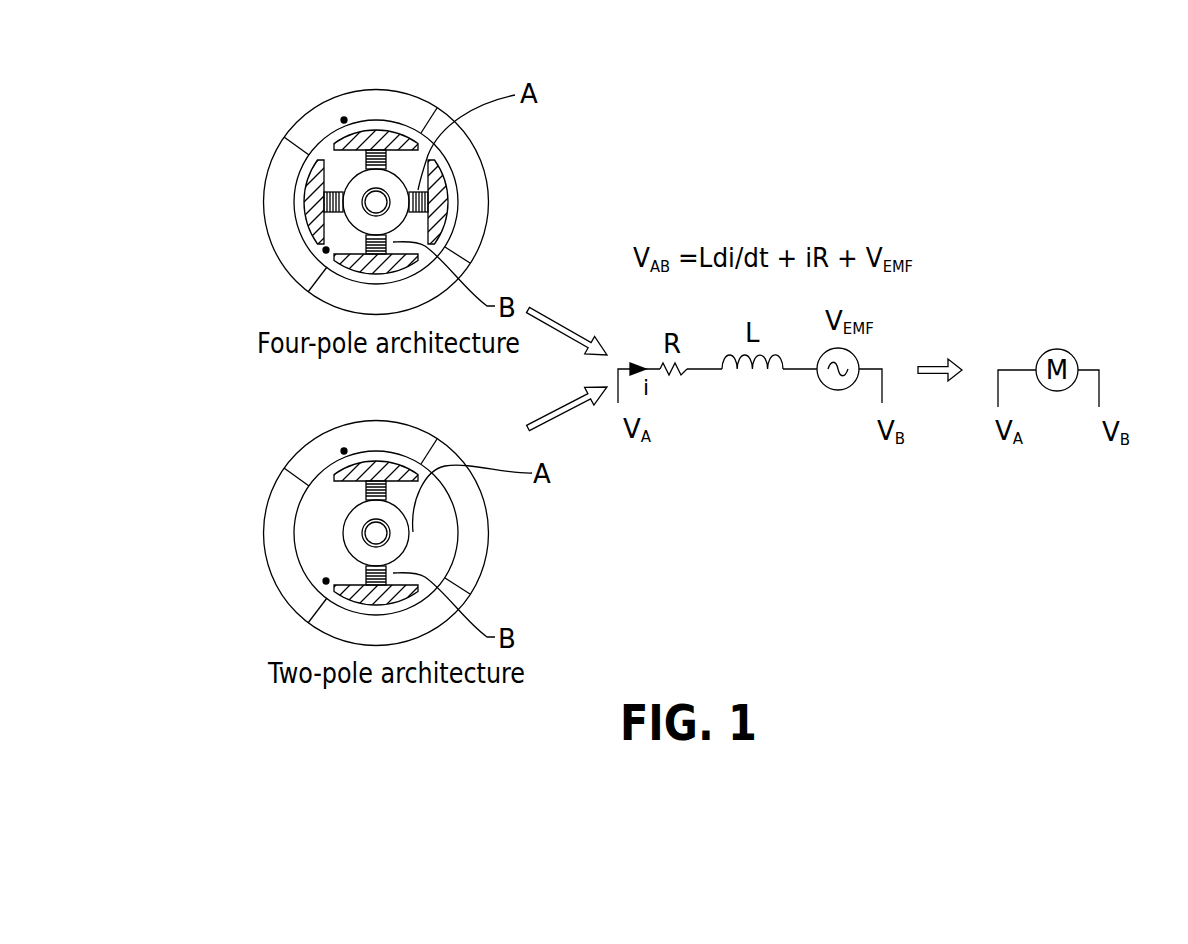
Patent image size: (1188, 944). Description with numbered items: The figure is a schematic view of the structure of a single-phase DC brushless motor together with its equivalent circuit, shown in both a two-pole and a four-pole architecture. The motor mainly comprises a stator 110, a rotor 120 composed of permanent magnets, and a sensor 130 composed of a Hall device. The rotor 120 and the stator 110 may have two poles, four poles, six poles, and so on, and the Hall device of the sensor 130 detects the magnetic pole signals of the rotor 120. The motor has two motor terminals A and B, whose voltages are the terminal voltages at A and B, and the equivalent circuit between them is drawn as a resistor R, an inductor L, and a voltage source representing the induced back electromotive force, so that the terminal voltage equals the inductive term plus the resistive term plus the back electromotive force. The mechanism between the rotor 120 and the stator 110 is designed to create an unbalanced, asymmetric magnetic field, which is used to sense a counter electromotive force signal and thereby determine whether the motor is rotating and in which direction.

The stator 110 is at (357, 182).
The rotor 120 is at (280, 196).
The sensor 130 is at (326, 250).